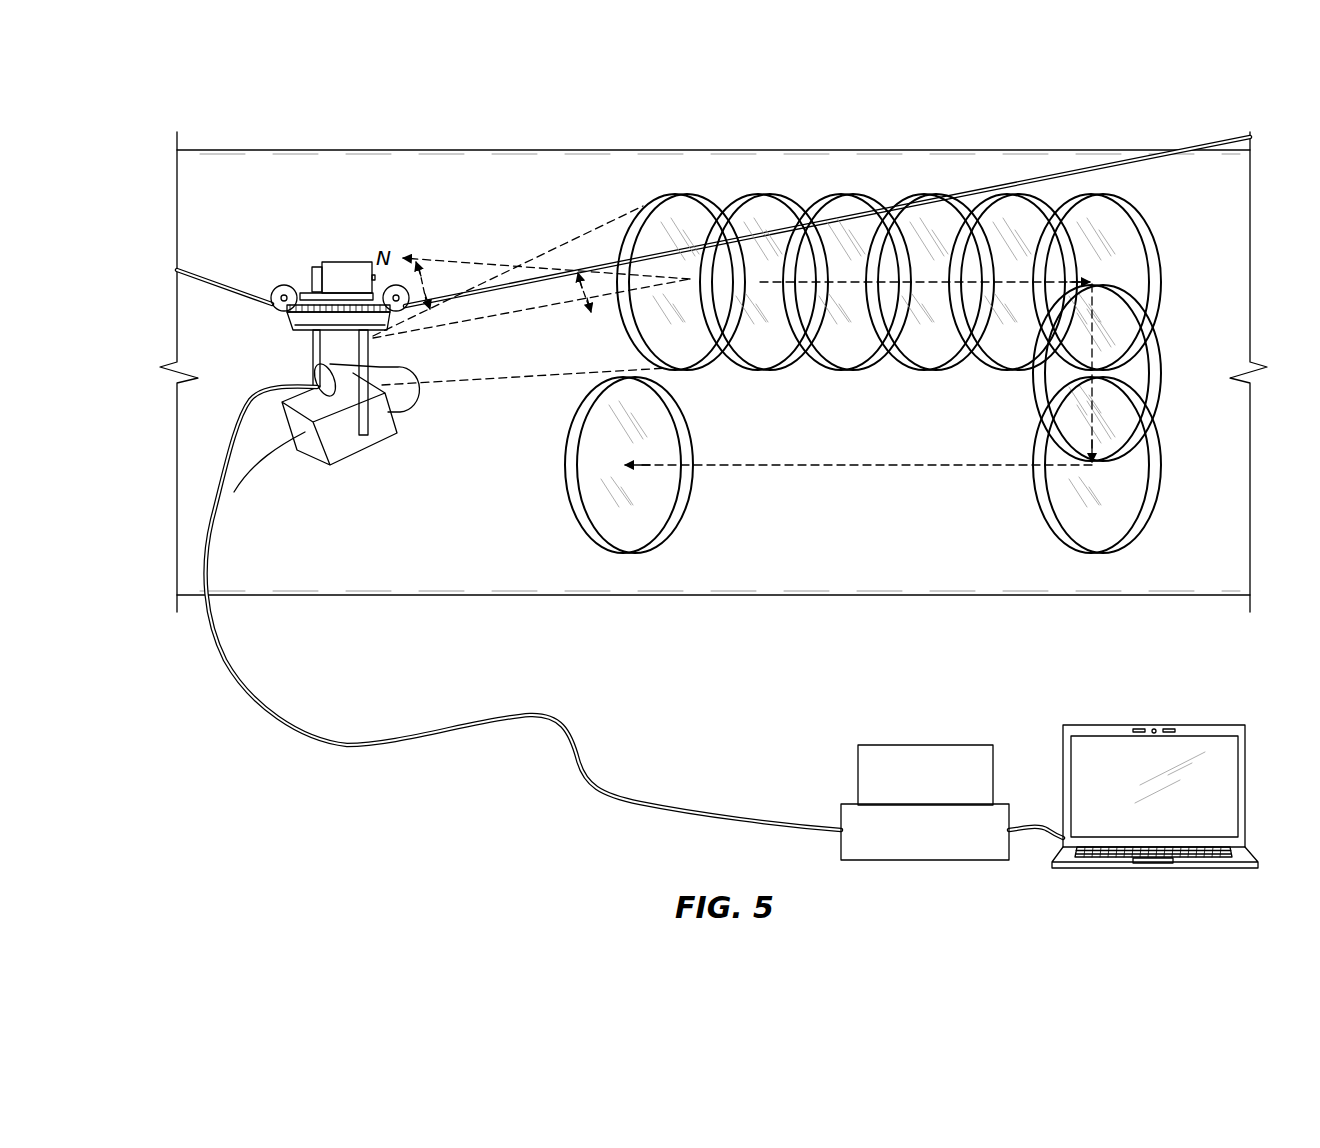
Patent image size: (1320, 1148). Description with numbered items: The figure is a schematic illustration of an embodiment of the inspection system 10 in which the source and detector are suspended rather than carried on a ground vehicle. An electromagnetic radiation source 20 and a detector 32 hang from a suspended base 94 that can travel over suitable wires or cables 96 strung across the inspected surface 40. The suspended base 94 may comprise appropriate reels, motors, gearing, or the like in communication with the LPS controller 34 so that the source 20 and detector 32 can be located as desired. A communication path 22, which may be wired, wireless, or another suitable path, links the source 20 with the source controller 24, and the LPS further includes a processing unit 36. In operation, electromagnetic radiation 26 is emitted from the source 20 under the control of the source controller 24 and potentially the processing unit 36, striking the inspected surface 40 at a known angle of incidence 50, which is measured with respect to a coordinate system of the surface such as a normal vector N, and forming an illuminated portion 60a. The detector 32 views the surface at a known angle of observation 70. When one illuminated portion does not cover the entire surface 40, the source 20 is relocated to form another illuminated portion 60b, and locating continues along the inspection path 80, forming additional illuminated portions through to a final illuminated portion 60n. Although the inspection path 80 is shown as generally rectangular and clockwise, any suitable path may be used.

The inspection system 10 is at (188, 108).
The electromagnetic radiation source 20 is at (323, 374).
The communication path 22 is at (584, 748).
The source controller 24 is at (857, 771).
The electromagnetic radiation 26 is at (579, 265).
The detector 32 is at (385, 432).
The LPS controller 34 is at (841, 816).
The processing unit 36 is at (1246, 786).
The inspected surface 40 is at (882, 567).
The angle of incidence 50 is at (426, 285).
The illuminated portion 60a is at (690, 195).
The illuminated portion 60b is at (771, 195).
The illuminated portion 60n is at (582, 467).
The angle of observation 70 is at (583, 292).
The inspection path 80 is at (877, 463).
The suspended base 94 is at (345, 262).
The wires 96 is at (219, 272).